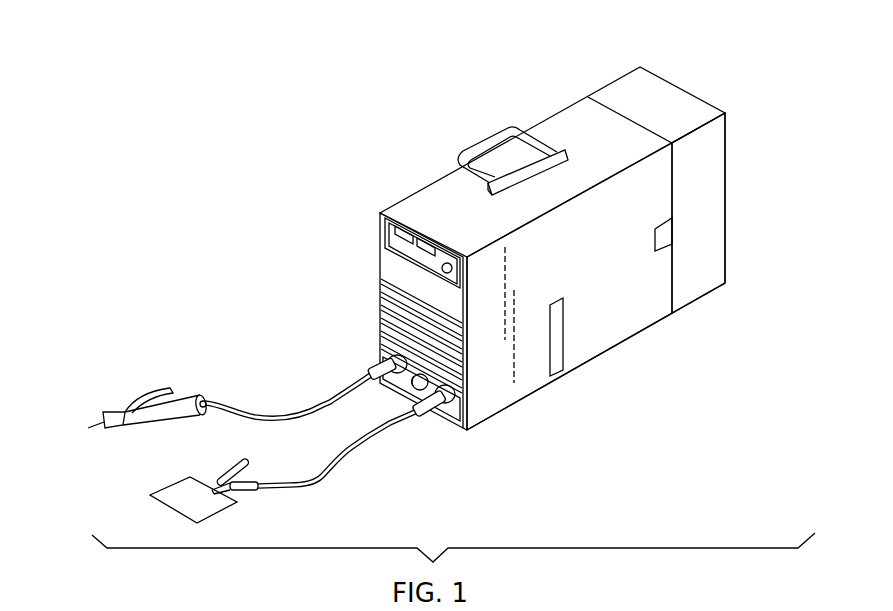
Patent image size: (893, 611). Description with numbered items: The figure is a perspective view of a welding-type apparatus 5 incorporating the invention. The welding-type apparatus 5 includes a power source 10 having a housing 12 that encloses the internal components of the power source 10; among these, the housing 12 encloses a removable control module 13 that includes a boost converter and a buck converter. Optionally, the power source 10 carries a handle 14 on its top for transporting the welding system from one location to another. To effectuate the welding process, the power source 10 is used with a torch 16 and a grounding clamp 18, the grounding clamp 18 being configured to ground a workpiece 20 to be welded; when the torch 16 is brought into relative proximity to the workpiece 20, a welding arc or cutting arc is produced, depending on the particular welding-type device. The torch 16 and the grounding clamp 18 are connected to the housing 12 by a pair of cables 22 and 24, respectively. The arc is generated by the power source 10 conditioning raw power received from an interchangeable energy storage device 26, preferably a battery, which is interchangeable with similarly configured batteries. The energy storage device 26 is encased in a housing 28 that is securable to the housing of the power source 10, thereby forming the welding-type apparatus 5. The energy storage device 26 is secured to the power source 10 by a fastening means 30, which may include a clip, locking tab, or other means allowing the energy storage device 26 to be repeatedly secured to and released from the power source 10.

The welding-type apparatus 5 is at (411, 74).
The power source 10 is at (365, 166).
The housing 12 is at (570, 270).
The removable control module 13 is at (564, 334).
The handle 14 is at (512, 129).
The torch 16 is at (184, 398).
The grounding clamp 18 is at (241, 465).
The workpiece 20 is at (178, 505).
The cable 22 is at (255, 410).
The cable 24 is at (320, 483).
The interchangeable energy storage device 26 is at (699, 71).
The housing 28 is at (688, 207).
The fastening means 30 is at (654, 234).